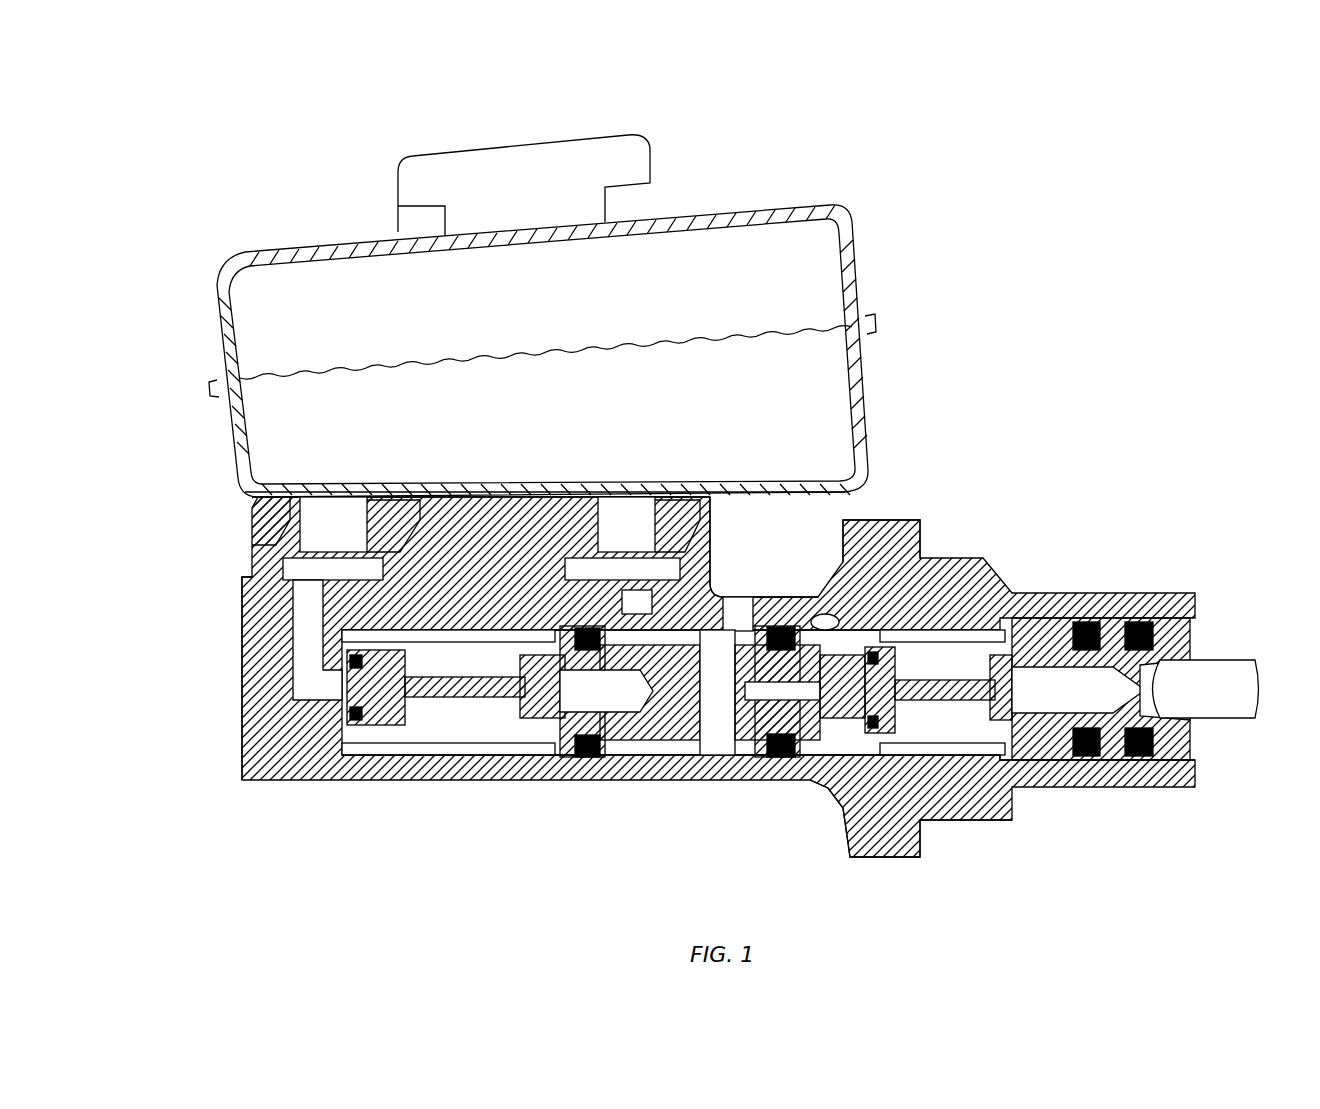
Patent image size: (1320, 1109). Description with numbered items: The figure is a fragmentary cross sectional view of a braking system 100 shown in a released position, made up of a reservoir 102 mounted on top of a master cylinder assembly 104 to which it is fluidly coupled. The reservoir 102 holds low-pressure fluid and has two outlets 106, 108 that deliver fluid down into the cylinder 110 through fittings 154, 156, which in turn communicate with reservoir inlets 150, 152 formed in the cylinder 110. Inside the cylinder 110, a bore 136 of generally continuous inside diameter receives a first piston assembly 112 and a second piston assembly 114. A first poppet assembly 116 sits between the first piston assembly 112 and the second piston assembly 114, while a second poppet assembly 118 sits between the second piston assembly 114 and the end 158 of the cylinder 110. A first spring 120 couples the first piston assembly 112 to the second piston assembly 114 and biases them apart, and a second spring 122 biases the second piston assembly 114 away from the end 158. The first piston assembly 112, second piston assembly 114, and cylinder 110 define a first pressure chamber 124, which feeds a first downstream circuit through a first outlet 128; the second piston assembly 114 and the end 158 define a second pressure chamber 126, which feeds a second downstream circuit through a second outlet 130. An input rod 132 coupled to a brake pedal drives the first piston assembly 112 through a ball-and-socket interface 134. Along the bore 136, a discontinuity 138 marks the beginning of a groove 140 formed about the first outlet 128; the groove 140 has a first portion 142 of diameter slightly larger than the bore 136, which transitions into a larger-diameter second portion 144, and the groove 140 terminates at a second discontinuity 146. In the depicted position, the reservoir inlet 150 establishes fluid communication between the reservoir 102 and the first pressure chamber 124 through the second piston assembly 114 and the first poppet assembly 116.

The braking system 100 is at (186, 190).
The reservoir 102 is at (845, 218).
The master cylinder assembly 104 is at (1100, 560).
The outlet 106 is at (625, 485).
The outlet 108 is at (345, 480).
The cylinder 110 is at (1012, 590).
The first piston assembly 112 is at (1194, 637).
The second piston assembly 114 is at (660, 742).
The first poppet assembly 116 is at (888, 665).
The second poppet assembly 118 is at (410, 665).
The first spring 120 is at (985, 750).
The second spring 122 is at (470, 740).
The first pressure chamber 124 is at (952, 734).
The second pressure chamber 126 is at (462, 732).
The first outlet 128 is at (850, 525).
The second outlet 130 is at (330, 626).
The input rod 132 is at (1230, 722).
The ball-and-socket interface 134 is at (1178, 678).
The bore 136 is at (715, 620).
The discontinuity 138 is at (748, 622).
The groove 140 is at (770, 588).
The first portion 142 is at (780, 615).
The second portion 144 is at (800, 742).
The second discontinuity 146 is at (890, 810).
The reservoir inlet 150 is at (645, 603).
The reservoir inlet 152 is at (317, 640).
The fitting 154 is at (712, 520).
The fitting 156 is at (262, 500).
The end 158 is at (243, 745).